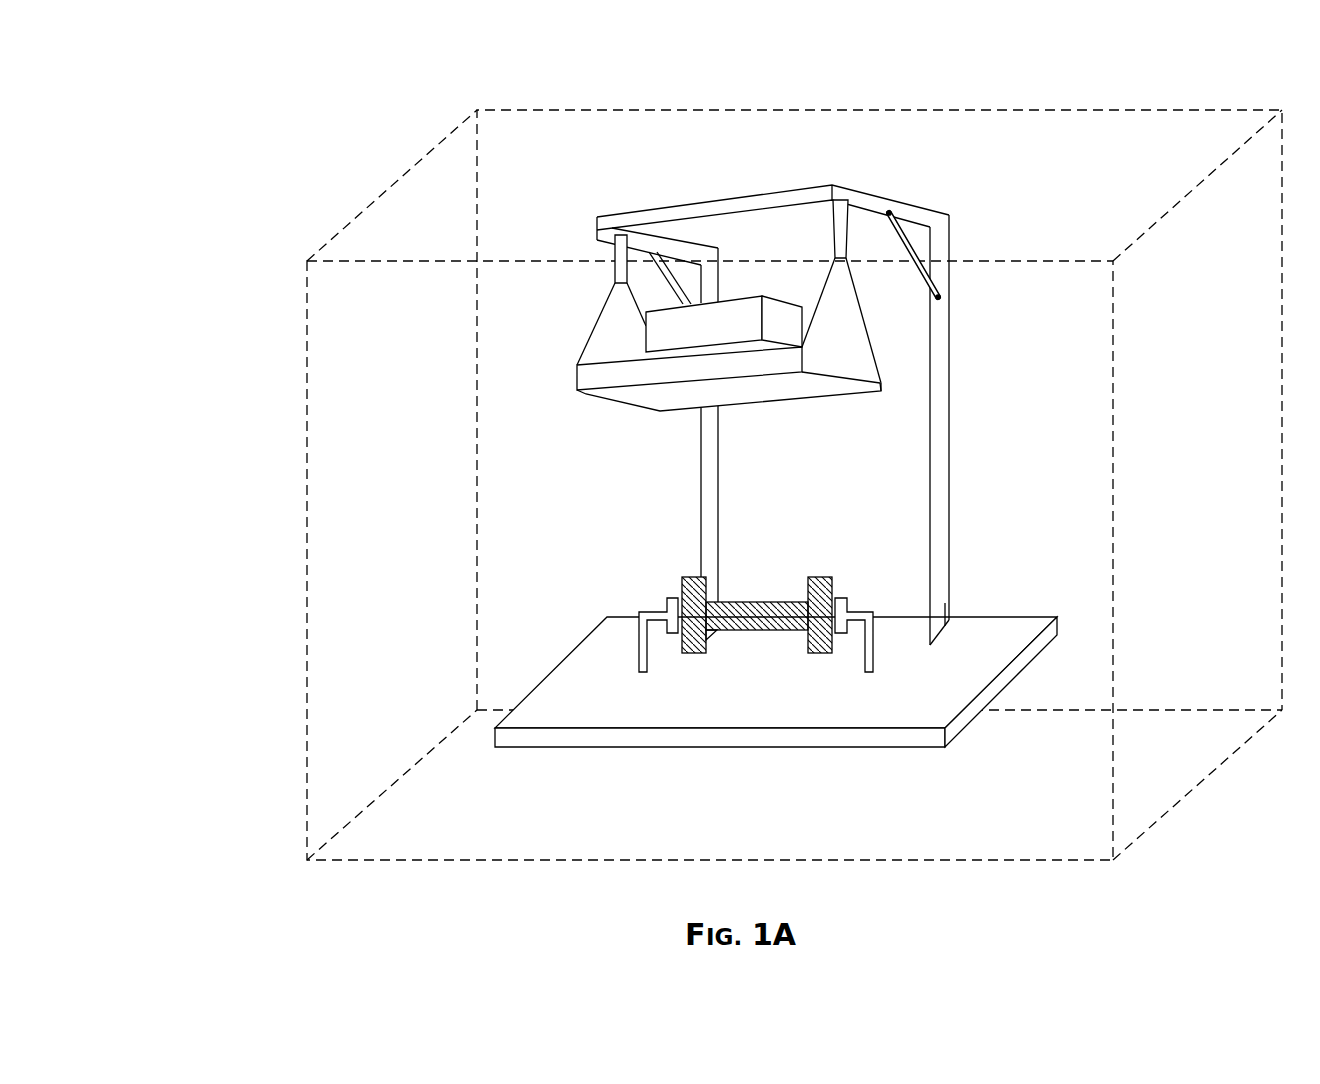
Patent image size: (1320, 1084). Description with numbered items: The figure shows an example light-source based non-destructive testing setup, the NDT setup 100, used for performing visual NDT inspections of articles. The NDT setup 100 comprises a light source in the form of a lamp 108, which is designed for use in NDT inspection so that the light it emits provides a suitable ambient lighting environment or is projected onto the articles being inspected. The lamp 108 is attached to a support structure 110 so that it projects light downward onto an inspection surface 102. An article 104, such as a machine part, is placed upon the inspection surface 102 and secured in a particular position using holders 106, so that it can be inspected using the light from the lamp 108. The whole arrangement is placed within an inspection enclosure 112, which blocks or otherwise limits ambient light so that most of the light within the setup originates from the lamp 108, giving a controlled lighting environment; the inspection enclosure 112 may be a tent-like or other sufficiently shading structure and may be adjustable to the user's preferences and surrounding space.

The NDT setup 100 is at (265, 118).
The inspection surface 102 is at (594, 671).
The article 104 is at (673, 577).
The holders 106 is at (655, 673).
The light source 108 is at (575, 372).
The support structure 110 is at (725, 452).
The inspection enclosure 112 is at (303, 446).